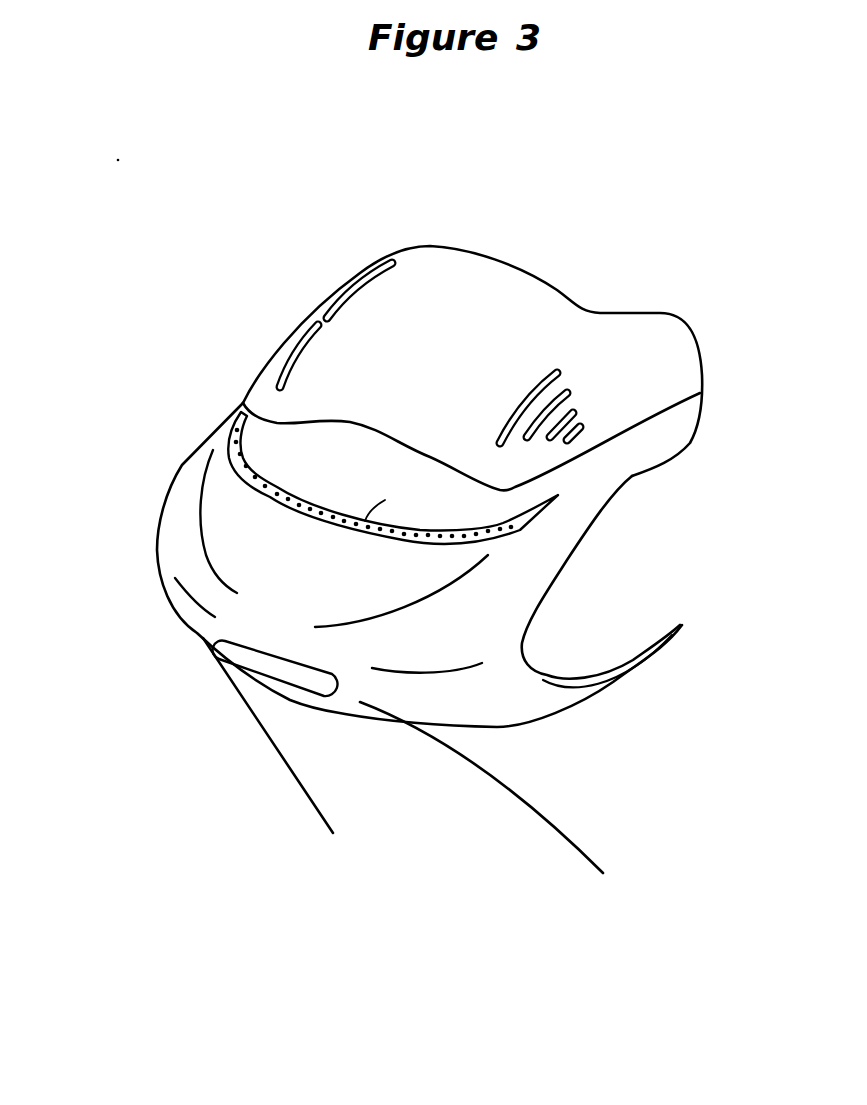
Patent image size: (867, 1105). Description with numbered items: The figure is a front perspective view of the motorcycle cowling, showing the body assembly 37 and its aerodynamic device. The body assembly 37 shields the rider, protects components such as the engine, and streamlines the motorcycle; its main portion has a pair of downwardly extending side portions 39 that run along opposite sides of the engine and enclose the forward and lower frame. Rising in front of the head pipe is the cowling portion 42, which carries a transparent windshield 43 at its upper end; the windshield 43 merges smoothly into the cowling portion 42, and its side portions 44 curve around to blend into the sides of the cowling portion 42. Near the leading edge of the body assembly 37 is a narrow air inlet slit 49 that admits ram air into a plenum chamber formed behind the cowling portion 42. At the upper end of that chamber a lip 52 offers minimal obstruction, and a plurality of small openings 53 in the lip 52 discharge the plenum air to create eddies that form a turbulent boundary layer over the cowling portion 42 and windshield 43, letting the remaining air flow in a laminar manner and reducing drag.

The body assembly 37 is at (160, 628).
The side portions 39 is at (588, 824).
The cowling portion 42 is at (240, 410).
The windshield 43 is at (490, 270).
The side portions 44 is at (677, 367).
The air inlet slit 49 is at (247, 659).
The lip 52 is at (273, 487).
The openings 53 is at (360, 520).